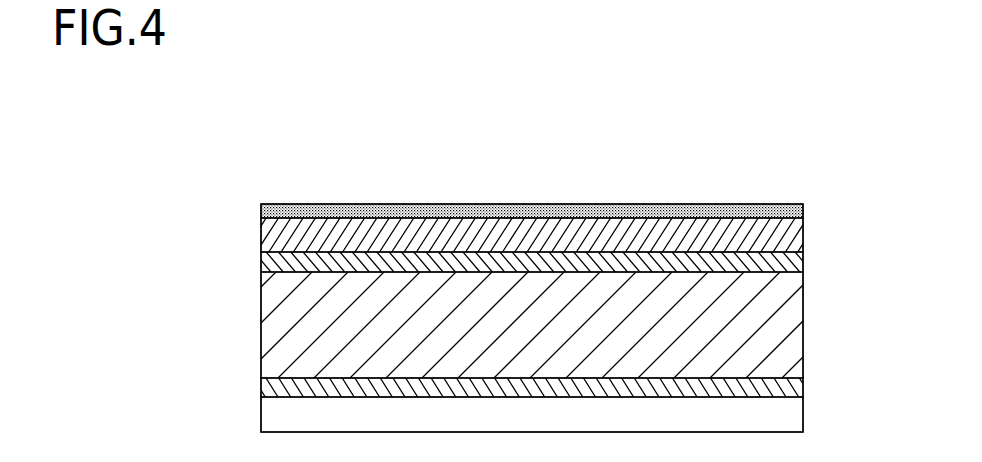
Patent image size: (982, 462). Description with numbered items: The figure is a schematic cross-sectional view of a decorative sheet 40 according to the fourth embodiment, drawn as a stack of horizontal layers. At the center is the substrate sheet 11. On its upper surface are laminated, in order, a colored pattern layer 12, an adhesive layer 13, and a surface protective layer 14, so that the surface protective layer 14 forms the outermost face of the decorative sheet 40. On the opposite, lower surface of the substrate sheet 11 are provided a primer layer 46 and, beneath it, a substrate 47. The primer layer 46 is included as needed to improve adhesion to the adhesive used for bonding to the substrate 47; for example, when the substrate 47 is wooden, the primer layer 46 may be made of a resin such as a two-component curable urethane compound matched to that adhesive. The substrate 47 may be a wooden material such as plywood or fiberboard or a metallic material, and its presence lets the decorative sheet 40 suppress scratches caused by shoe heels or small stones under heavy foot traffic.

The decorative sheet 40 is at (275, 151).
The surface protective layer 14 is at (805, 206).
The adhesive layer 13 is at (805, 228).
The colored pattern layer 12 is at (805, 256).
The substrate sheet 11 is at (797, 325).
The primer layer 46 is at (805, 386).
The substrate 47 is at (797, 410).